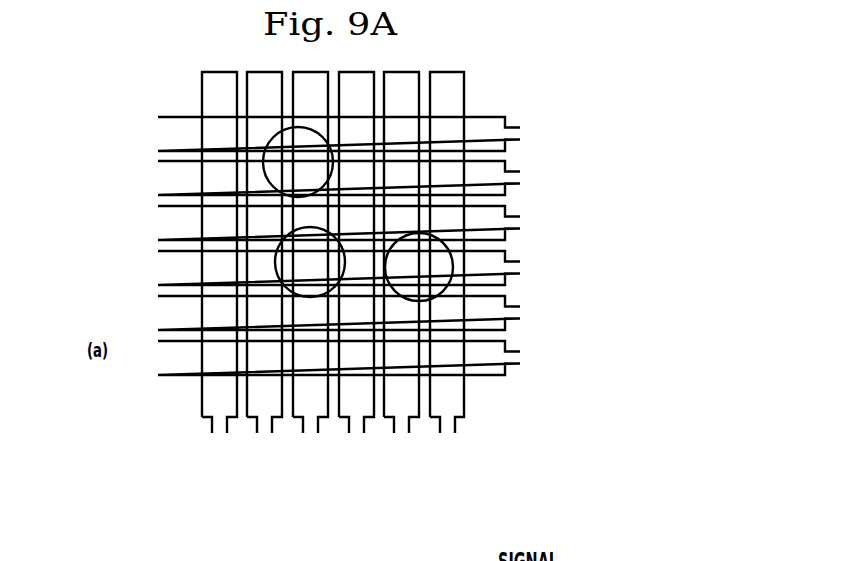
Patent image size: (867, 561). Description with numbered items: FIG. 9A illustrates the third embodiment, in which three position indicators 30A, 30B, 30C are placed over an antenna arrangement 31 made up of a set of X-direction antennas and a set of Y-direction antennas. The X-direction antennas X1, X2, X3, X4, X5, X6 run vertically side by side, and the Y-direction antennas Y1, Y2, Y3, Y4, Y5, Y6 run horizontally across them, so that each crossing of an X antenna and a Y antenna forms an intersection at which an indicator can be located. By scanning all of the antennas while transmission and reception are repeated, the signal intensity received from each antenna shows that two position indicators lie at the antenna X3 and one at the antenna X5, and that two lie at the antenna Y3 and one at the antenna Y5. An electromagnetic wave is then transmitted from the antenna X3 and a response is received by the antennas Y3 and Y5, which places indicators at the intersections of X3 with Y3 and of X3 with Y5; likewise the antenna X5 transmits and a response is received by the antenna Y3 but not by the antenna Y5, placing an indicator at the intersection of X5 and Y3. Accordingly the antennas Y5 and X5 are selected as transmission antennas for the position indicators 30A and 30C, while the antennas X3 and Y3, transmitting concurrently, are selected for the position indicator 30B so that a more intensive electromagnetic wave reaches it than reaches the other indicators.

The position detecting tablet (electrode matrix) 31 is at (375, 249).
The position indicator 30A is at (263, 168).
The position indicator 30B is at (277, 263).
The position indicator 30C is at (432, 300).
The X-direction loop coil/electrode X1 is at (212, 418).
The X-direction loop coil/electrode X2 is at (260, 418).
The antenna X3 is at (295, 418).
The X-direction loop coil/electrode X4 is at (370, 418).
The antenna X5 is at (415, 420).
The X-direction loop coil/electrode X6 is at (460, 420).
The Y-direction loop coil/electrode Y1 is at (505, 366).
The Y-direction loop coil/electrode Y2 is at (507, 326).
The antenna Y3 is at (507, 252).
The Y-direction loop coil/electrode Y4 is at (507, 208).
The antenna Y5 is at (507, 160).
The Y-direction loop coil/electrode Y6 is at (505, 118).